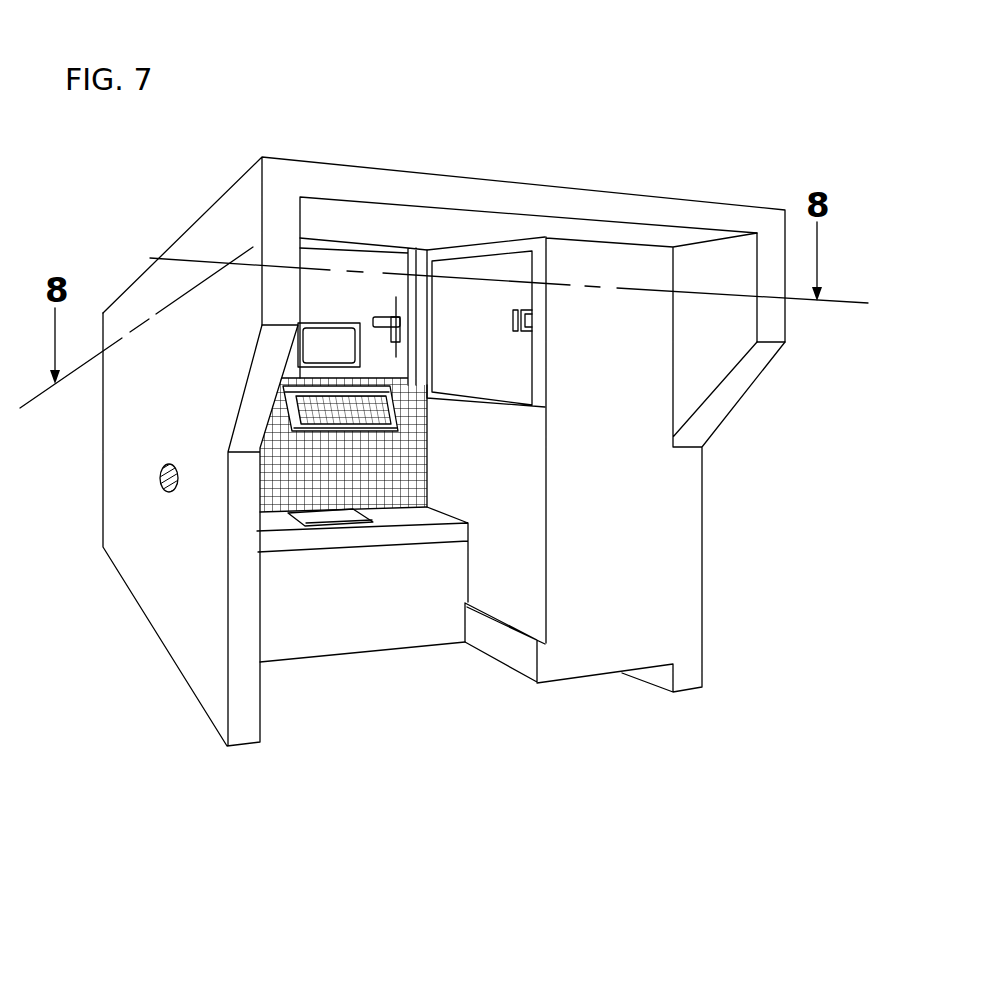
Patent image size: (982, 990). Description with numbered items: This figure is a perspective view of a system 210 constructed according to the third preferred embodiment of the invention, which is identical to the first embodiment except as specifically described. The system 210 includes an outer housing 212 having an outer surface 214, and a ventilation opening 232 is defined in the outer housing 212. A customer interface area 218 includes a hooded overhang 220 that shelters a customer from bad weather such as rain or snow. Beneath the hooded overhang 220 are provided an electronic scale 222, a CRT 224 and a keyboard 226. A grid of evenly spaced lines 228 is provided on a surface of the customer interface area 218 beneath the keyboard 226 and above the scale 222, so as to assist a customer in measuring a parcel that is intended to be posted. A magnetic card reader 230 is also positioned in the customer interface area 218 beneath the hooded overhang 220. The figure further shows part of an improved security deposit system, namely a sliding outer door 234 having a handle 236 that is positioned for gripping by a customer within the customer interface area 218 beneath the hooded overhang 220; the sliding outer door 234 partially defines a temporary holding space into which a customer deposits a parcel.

The system 210 is at (436, 146).
The outer housing 212 is at (196, 226).
The outer surface 214 is at (335, 638).
The customer interface area 218 is at (432, 700).
The hooded overhang 220 is at (341, 208).
The electronic scale 222 is at (348, 511).
The CRT 224 is at (350, 358).
The keyboard 226 is at (288, 397).
The grid of evenly spaced lines 228 is at (413, 462).
The magnetic card reader 230 is at (401, 318).
The ventilation opening 232 is at (160, 473).
The sliding outer door 234 is at (498, 333).
The handle 236 is at (533, 326).